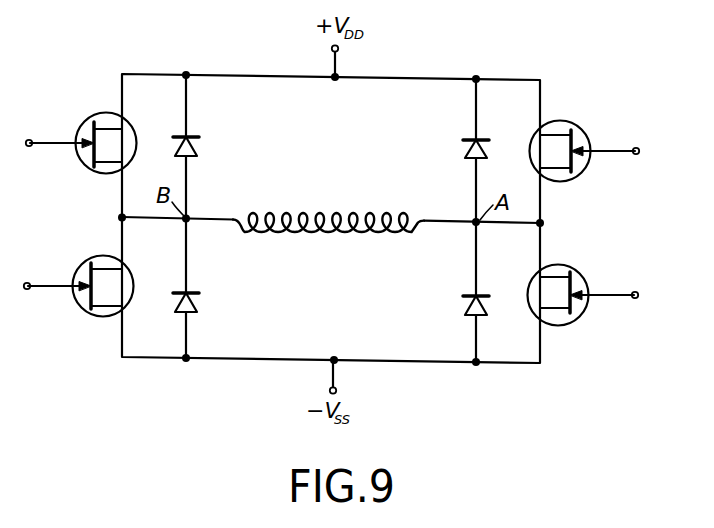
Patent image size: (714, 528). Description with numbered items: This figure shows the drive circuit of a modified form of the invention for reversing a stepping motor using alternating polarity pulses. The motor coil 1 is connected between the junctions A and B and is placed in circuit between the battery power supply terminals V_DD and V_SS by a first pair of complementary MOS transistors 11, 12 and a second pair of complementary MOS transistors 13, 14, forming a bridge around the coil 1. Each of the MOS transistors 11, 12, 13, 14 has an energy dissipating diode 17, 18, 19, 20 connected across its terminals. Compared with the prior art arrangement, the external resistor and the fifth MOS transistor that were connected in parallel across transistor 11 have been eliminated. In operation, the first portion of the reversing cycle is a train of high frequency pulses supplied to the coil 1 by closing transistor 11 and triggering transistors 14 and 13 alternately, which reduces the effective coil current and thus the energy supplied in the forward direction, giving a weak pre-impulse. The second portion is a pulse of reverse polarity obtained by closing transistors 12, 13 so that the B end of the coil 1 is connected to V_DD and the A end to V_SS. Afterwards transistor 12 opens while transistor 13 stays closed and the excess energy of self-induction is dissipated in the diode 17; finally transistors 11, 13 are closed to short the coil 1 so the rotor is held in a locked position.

The motor coil 1 is at (346, 212).
The MOS transistor 11 is at (97, 317).
The MOS transistor 12 is at (101, 113).
The MOS transistor 13 is at (580, 313).
The MOS transistor 14 is at (585, 125).
The energy dissipating diode 17 is at (197, 305).
The energy dissipating diode 18 is at (198, 148).
The energy dissipating diode 19 is at (463, 308).
The energy dissipating diode 20 is at (470, 143).